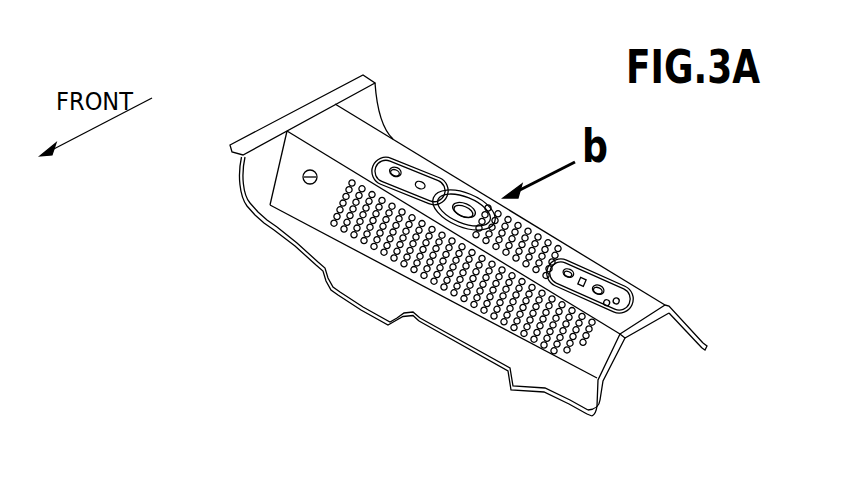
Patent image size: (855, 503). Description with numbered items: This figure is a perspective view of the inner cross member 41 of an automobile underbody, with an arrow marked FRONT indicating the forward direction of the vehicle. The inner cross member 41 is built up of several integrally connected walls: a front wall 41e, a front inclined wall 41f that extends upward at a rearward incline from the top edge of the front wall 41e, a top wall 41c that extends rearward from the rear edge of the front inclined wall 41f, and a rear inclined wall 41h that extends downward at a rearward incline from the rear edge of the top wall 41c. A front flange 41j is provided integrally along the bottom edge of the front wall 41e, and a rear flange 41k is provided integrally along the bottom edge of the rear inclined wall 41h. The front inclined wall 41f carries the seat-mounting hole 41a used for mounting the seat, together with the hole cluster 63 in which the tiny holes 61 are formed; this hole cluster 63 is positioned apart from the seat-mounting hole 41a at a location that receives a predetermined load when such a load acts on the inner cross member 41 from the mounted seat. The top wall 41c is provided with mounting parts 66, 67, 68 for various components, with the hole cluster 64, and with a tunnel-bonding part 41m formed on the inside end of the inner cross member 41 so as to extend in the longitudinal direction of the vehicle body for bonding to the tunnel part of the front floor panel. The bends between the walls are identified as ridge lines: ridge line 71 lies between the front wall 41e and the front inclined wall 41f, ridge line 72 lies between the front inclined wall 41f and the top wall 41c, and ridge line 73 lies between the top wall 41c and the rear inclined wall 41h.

The inner cross member 41 is at (474, 141).
The tunnel-bonding part 41m is at (257, 133).
The top wall 41c is at (372, 150).
The front inclined wall 41f is at (325, 206).
The front wall 41e is at (355, 264).
The front flange 41j is at (448, 322).
The seat-mounting hole 41a is at (268, 197).
The rear inclined wall 41h is at (693, 323).
The rear flange 41k is at (706, 352).
The tiny holes 61 is at (535, 222).
The hole cluster 63 is at (419, 289).
The hole cluster 64 is at (560, 235).
The mounting part 66 is at (416, 156).
The mounting part 67 is at (476, 188).
The mounting part 68 is at (607, 268).
The ridge line 71 is at (597, 414).
The ridge line 72 is at (642, 333).
The ridge line 73 is at (636, 281).